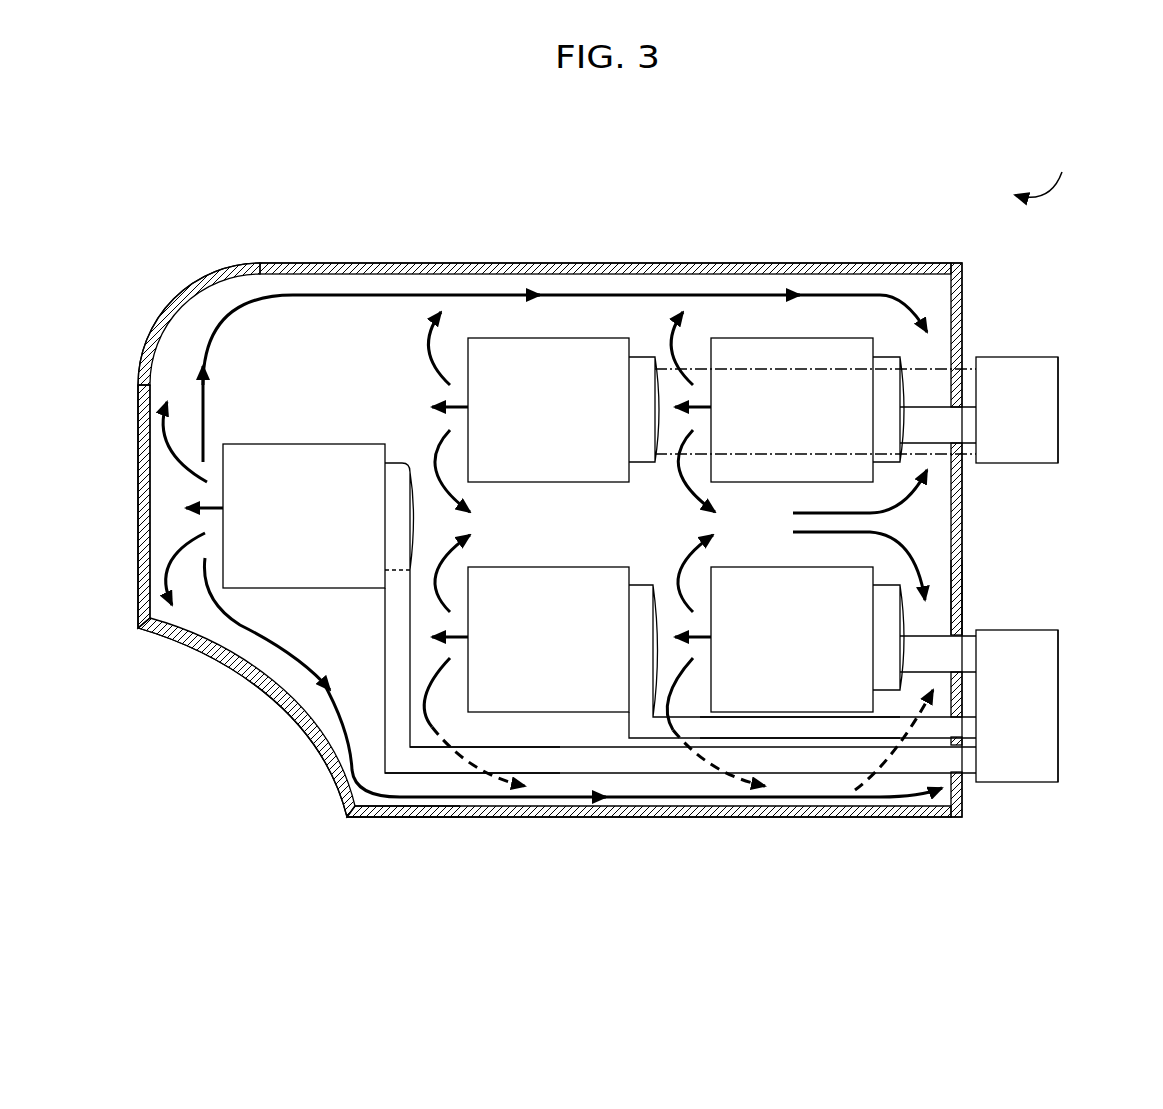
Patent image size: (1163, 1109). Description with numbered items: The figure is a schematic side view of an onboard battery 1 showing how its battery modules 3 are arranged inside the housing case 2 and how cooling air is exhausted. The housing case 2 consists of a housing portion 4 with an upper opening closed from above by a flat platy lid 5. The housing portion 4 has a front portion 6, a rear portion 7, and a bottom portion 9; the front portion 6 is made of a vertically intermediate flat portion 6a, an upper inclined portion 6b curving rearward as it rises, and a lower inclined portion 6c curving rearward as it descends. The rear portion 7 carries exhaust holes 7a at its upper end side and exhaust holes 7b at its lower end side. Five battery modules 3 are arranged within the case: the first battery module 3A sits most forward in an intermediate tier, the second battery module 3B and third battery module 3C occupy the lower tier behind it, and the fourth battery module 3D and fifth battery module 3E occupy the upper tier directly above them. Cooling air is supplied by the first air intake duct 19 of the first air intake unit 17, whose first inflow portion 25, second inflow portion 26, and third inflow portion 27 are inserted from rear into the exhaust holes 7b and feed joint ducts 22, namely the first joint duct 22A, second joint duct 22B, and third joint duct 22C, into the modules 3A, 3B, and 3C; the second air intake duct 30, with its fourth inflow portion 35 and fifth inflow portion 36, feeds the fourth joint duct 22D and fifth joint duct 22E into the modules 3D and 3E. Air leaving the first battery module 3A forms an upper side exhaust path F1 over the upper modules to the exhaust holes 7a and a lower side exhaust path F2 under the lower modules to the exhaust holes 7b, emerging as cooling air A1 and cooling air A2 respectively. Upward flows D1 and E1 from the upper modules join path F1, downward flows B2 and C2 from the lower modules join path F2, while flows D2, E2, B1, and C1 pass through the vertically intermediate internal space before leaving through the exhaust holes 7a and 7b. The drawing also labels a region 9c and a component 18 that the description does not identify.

The onboard battery 1 is at (1062, 165).
The housing case 2 is at (932, 263).
The battery modules 3 is at (528, 526).
The first battery module 3A is at (273, 455).
The second battery module 3B is at (552, 700).
The third battery module 3C is at (780, 690).
The fourth battery module 3D is at (478, 345).
The fifth battery module 3E is at (737, 340).
The housing portion 4 is at (138, 578).
The lid 5 is at (508, 263).
The front portion 6 is at (212, 531).
The flat portion 6a is at (138, 460).
The upper inclined portion 6b is at (175, 328).
The lower inclined portion 6c is at (305, 722).
The rear portion 7 is at (964, 290).
The exhaust holes 7a is at (963, 347).
The exhaust holes 7b is at (967, 632).
The bottom portion 9 is at (613, 817).
The bottom wall portion 9c is at (383, 817).
The first air intake unit 17 is at (1047, 668).
The blower 18 is at (1047, 388).
The first air intake duct 19 is at (1047, 716).
The joint ducts 22 is at (658, 540).
The first joint duct 22A is at (397, 470).
The second joint duct 22B is at (657, 660).
The third joint duct 22C is at (895, 690).
The fourth joint duct 22D is at (645, 357).
The fifth joint duct 22E is at (890, 355).
The first inflow portion 25 is at (430, 762).
The second inflow portion 26 is at (808, 728).
The third inflow portion 27 is at (963, 633).
The second air intake duct 30 is at (1047, 436).
The fourth inflow portion 35 is at (932, 365).
The fifth inflow portion 36 is at (962, 478).
The cooling air A1 is at (165, 435).
The cooling air A2 is at (165, 585).
The cooling air B1 is at (452, 550).
The cooling air B2 is at (430, 707).
The cooling air C1 is at (680, 553).
The cooling air C2 is at (693, 657).
The cooling air D1 is at (425, 340).
The cooling air D2 is at (480, 494).
The cooling air E1 is at (673, 360).
The cooling air E2 is at (672, 490).
The upper side exhaust path F1 is at (658, 292).
The lower side exhaust path F2 is at (475, 800).